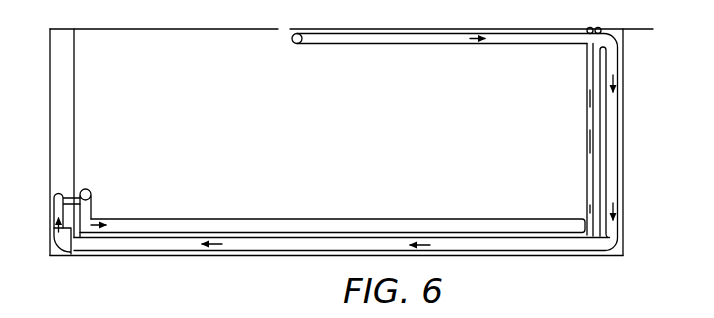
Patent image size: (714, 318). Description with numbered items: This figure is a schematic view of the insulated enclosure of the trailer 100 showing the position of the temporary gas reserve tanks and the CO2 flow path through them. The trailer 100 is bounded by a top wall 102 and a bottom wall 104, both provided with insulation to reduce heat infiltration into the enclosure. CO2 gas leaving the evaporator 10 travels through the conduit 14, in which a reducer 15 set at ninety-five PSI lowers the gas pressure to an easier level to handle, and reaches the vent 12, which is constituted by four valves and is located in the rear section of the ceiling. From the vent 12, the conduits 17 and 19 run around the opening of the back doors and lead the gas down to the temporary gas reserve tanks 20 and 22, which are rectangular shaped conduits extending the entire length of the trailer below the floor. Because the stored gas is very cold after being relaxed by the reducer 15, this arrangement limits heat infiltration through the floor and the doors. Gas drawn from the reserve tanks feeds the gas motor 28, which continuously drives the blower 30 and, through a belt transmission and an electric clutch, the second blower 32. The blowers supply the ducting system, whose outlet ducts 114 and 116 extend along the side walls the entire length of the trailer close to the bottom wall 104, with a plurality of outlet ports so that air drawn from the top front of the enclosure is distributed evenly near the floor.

The evaporator 10 is at (294, 43).
The vent 12 is at (599, 27).
The conduit 14 is at (410, 37).
The reducer 15 is at (589, 27).
The conduit 17 is at (613, 57).
The conduit 19 is at (585, 80).
The temporary gas reserve tank 20 is at (190, 247).
The temporary gas reserve tank 22 is at (292, 252).
The gas motor 28 is at (51, 237).
The blower 30 is at (56, 195).
The second blower 32 is at (89, 191).
The trailer 100 is at (351, 161).
The top wall 102 is at (242, 28).
The bottom wall 104 is at (513, 257).
The outlet duct 114 is at (233, 219).
The outlet duct 116 is at (278, 219).